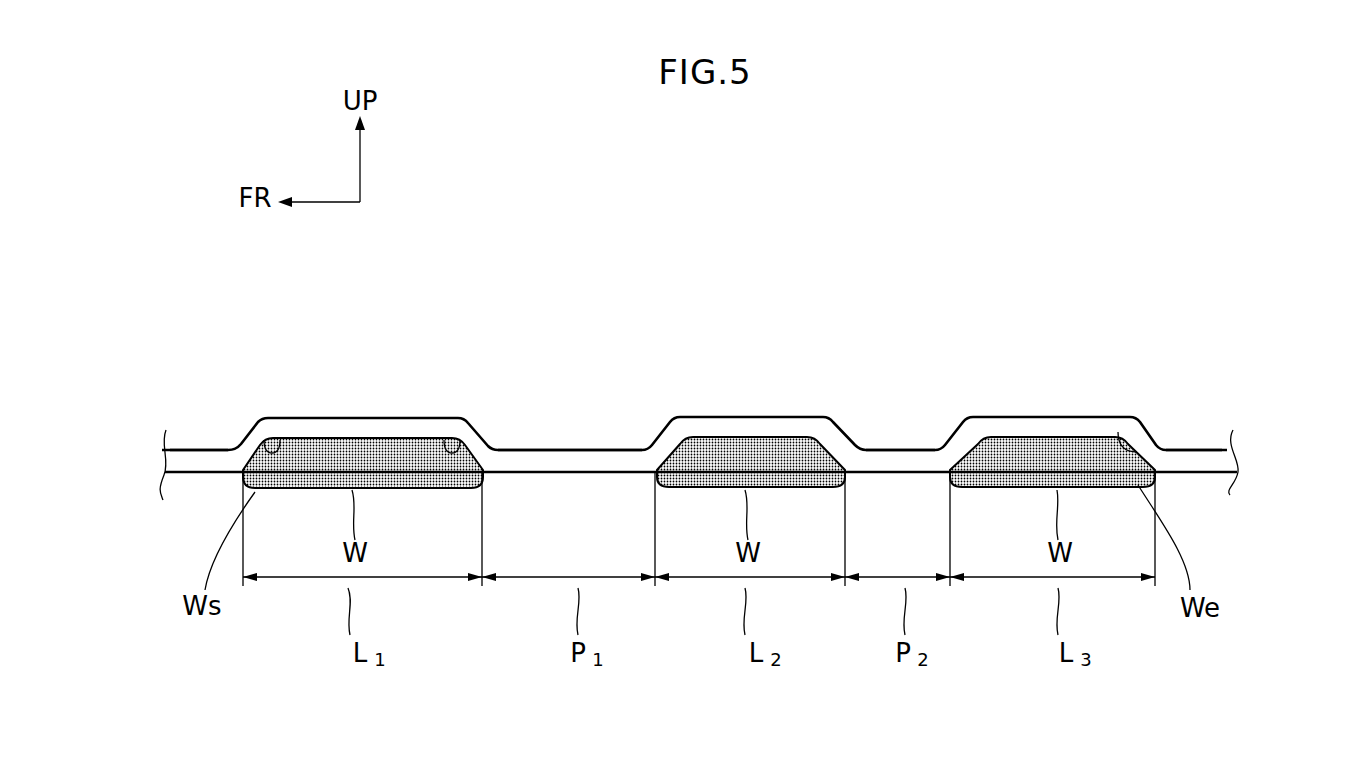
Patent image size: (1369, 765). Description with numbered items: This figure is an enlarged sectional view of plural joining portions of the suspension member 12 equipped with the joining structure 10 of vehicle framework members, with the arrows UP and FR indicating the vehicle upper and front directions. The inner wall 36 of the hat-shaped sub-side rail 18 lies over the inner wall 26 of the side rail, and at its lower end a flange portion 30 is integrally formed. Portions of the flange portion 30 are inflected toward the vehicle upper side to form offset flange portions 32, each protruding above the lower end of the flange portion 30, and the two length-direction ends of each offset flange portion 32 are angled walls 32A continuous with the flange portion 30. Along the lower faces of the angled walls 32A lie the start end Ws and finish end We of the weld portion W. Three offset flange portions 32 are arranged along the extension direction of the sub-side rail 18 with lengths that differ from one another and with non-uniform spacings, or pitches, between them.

The joining structure 10 is at (224, 477).
The suspension member 12 is at (623, 314).
The sub-side rail 18 is at (1212, 437).
The inner wall 26 is at (746, 529).
The flange portion 30 is at (198, 448).
The offset flange portion 32 is at (355, 416).
The angled wall 32A is at (276, 440).
The inner wall 36 is at (749, 434).